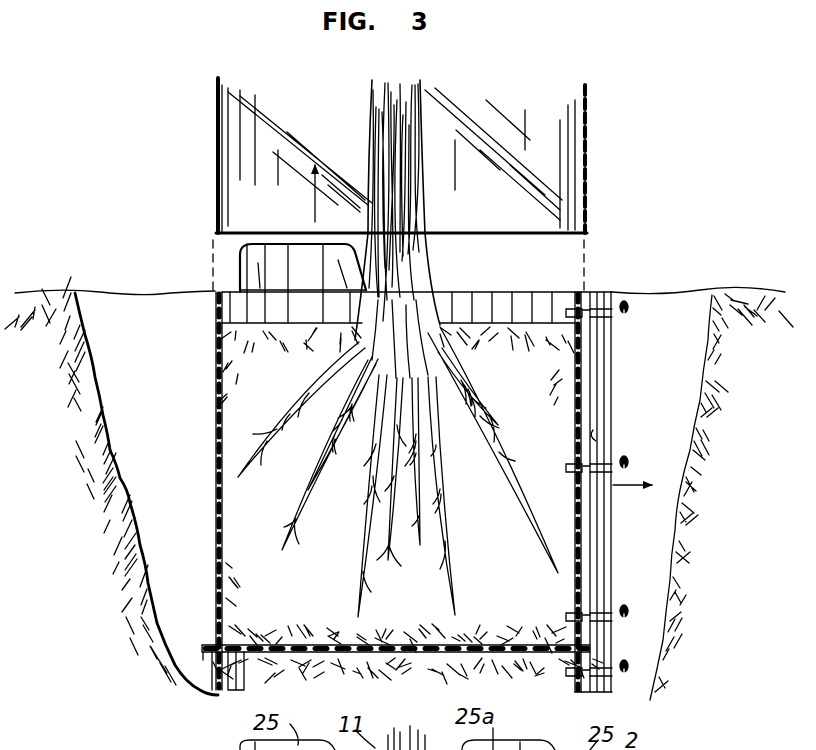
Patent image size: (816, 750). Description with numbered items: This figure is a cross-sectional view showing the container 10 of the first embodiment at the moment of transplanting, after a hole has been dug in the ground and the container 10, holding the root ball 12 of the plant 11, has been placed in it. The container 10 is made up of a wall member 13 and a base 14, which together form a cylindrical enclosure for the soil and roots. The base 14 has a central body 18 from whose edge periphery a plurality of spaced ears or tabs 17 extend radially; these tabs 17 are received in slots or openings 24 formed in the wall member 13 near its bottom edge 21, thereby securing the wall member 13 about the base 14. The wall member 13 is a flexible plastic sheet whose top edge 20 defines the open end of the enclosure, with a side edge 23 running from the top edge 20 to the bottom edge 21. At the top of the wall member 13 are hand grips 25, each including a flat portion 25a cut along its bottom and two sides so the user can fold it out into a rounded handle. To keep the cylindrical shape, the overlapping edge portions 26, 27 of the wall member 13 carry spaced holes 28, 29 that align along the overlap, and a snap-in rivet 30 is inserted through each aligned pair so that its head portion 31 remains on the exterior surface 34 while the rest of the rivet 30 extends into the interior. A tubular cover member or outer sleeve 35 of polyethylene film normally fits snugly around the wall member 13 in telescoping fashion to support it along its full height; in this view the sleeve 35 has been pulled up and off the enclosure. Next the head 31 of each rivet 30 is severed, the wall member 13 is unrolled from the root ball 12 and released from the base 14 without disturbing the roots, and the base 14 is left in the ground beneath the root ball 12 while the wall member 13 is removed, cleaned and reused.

The container 10 is at (617, 262).
The plant 11 is at (418, 150).
The root ball 12 is at (470, 300).
The wall member 13 is at (215, 387).
The base 14 is at (378, 654).
The ears or tabs 17 is at (205, 650).
The central body 18 is at (402, 644).
The top edge 20 is at (522, 298).
The bottom edge 21 is at (220, 693).
The side edge 23 is at (610, 392).
The slots or openings 24 is at (213, 683).
The hand grips 25 is at (240, 266).
The flat portion 25a is at (278, 270).
The edge portion 26 is at (574, 432).
The edge portion 27 is at (598, 432).
The holes 28 is at (573, 327).
The holes 29 is at (612, 298).
The snap-in rivet 30 is at (566, 312).
The head portion 31 is at (630, 313).
The exterior surface 34 is at (612, 358).
The tubular cover member or outer sleeve 35 is at (587, 138).